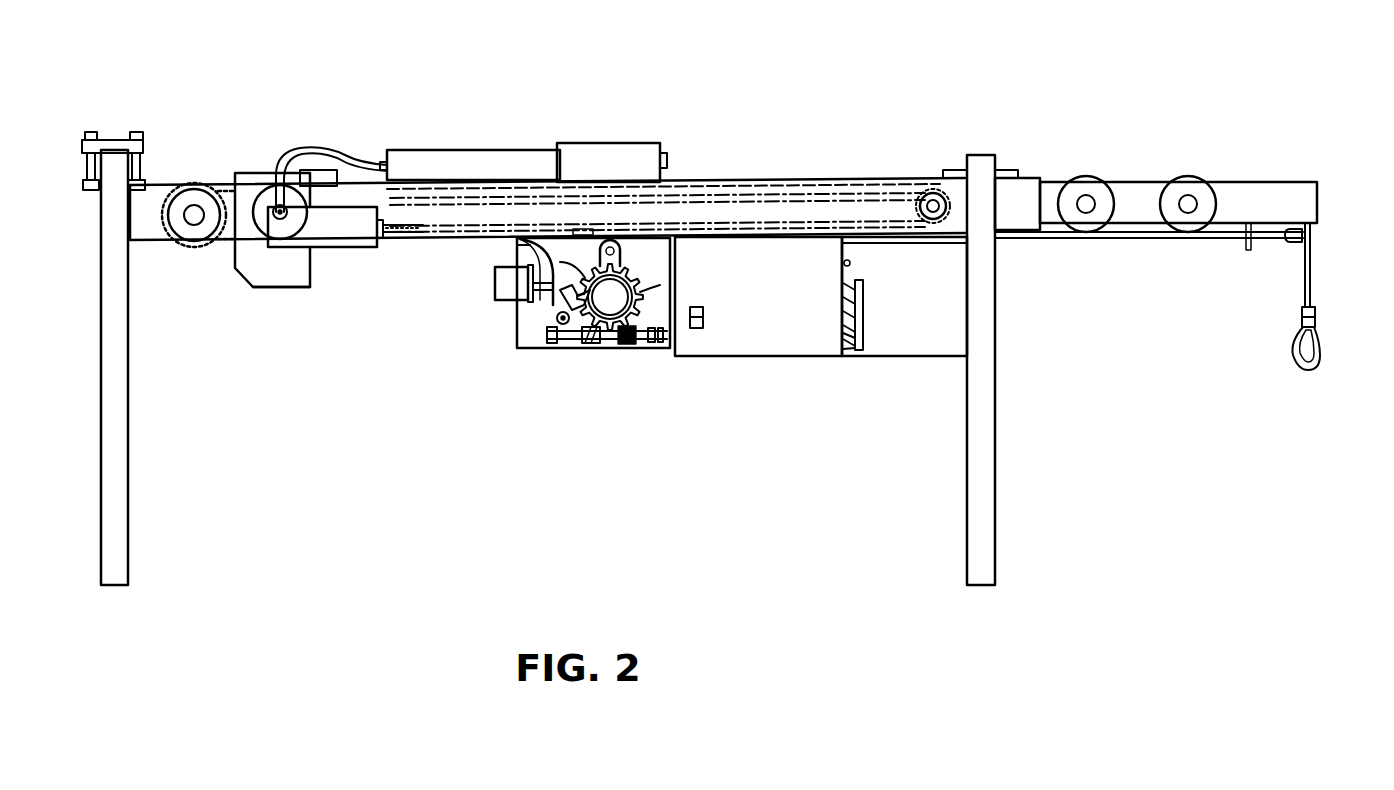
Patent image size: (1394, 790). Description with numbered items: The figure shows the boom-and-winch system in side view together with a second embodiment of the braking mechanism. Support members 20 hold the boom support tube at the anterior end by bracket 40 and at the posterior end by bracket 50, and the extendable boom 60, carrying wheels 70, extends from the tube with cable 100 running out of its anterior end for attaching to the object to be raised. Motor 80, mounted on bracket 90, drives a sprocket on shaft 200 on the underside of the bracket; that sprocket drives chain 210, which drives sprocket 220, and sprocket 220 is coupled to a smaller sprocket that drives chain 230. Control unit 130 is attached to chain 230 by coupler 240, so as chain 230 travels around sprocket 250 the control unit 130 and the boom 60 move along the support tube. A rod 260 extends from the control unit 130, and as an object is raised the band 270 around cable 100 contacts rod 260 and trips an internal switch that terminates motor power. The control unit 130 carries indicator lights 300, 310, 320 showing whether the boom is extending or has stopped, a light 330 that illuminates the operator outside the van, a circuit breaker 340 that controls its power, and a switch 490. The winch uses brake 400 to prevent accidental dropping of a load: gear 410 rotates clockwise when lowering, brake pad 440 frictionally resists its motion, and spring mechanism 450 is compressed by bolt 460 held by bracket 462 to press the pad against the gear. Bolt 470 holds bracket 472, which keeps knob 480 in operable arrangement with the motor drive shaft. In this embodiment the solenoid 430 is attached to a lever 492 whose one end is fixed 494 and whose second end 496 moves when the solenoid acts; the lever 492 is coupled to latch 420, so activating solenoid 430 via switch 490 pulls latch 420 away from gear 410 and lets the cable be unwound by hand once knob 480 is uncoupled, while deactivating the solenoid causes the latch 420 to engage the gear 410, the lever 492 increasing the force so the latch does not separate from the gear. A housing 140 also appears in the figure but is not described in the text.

The support members 20 is at (100, 222).
The bracket 40 is at (955, 168).
The bracket 50 is at (115, 147).
The extendable boom 60 is at (1277, 182).
The wheels 70 is at (1175, 178).
The motor 80 is at (325, 250).
The bracket 90 is at (248, 172).
The cable 100 is at (1310, 282).
The control unit 130 is at (742, 356).
The motor 140 is at (410, 150).
The shaft 200 is at (280, 205).
The chain 210 is at (228, 243).
The sprocket 220 is at (174, 200).
The chain 230 is at (402, 236).
The coupler 240 is at (582, 229).
The sprocket 250 is at (924, 196).
The rod 260 is at (1289, 244).
The band 270 is at (1300, 320).
The indicator light 300 is at (858, 312).
The indicator light 310 is at (861, 332).
The indicator light 320 is at (861, 346).
The light 330 is at (860, 302).
The circuit breaker 340 is at (850, 263).
The brake 400 is at (517, 330).
The gear 410 is at (628, 290).
The latch mechanism 420 is at (553, 250).
The solenoid 430 is at (495, 280).
The brake pad 440 is at (606, 345).
The spring mechanism 450 is at (594, 345).
The bolt 460 is at (545, 343).
The bracket 462 is at (560, 345).
The bolt 470 is at (611, 246).
The bracket 472 is at (598, 268).
The knob 480 is at (645, 294).
The switch 490 is at (705, 318).
The lever 492 is at (550, 306).
The fixed end 494 is at (556, 318).
The second end 496 is at (522, 246).